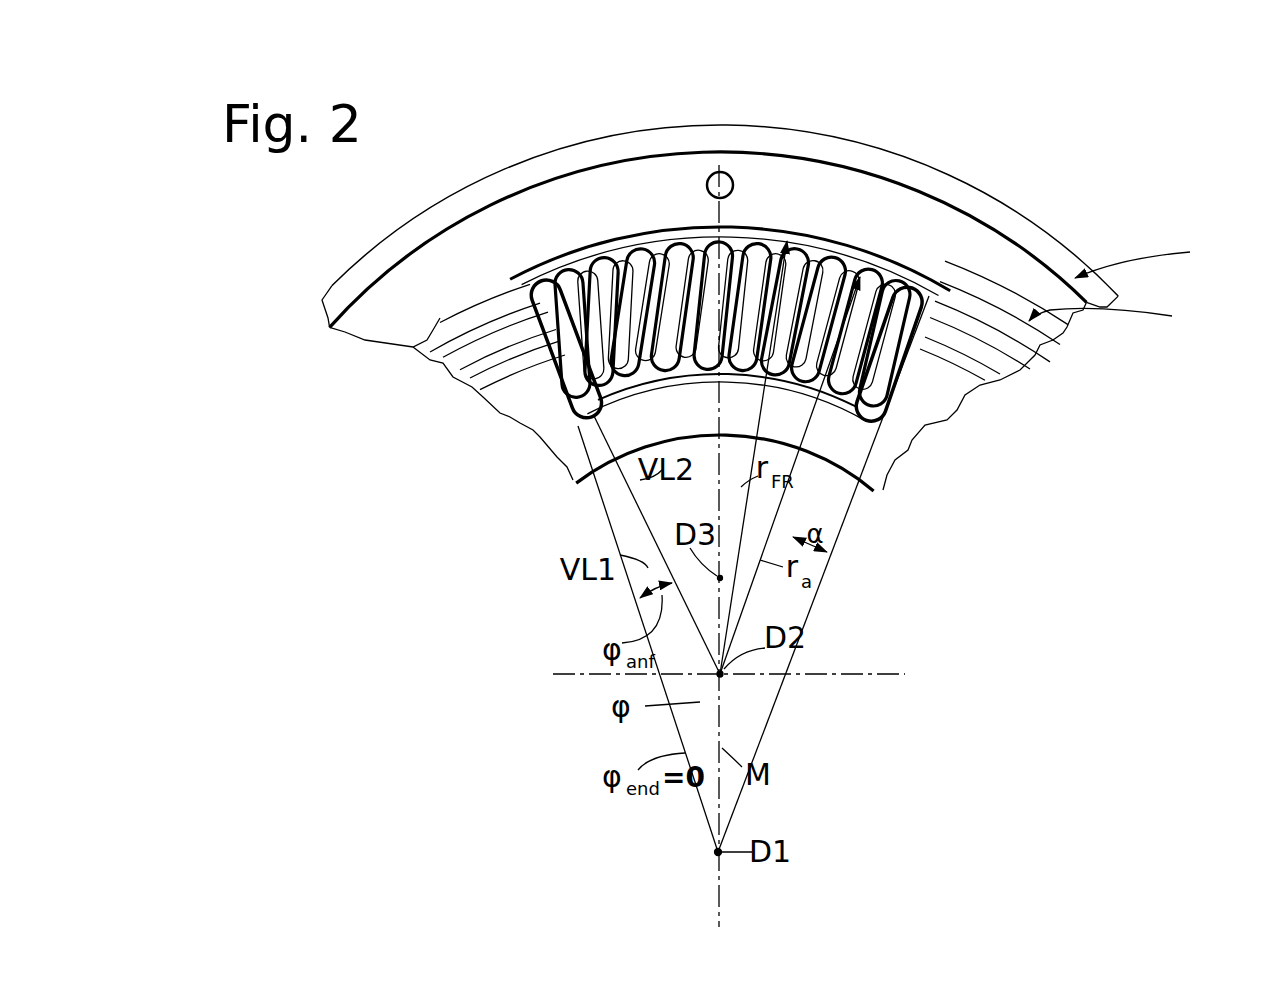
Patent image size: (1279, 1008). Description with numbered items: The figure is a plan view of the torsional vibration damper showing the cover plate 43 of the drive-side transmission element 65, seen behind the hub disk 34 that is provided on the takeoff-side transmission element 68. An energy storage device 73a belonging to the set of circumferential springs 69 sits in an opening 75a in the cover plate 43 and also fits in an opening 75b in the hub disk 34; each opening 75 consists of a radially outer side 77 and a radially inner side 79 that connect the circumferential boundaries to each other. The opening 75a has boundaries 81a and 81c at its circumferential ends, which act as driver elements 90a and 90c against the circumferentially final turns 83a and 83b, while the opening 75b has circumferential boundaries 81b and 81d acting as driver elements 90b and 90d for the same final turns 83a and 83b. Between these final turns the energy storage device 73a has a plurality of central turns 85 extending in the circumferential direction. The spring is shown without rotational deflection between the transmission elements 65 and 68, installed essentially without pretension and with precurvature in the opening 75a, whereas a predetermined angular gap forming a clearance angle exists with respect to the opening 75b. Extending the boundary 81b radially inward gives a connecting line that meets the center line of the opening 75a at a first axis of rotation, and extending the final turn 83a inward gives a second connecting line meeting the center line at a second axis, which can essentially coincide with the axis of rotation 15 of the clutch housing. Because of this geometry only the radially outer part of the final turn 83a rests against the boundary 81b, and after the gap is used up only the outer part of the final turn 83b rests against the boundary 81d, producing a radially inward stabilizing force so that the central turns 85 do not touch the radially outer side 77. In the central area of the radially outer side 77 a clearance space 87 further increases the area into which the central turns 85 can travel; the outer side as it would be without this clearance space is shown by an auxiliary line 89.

The axis of rotation 15 is at (724, 678).
The hub disk 34 is at (437, 272).
The cover plate 43 is at (437, 222).
The drive-side transmission element 65 is at (1153, 254).
The takeoff-side transmission element 68 is at (1120, 315).
The set of circumferential springs 69 is at (598, 330).
The energy storage device 73a is at (870, 258).
The opening 75 is at (755, 240).
The opening in the cover plate 75a is at (880, 425).
The opening in the takeoff-side transmission element 75b is at (933, 313).
The radially outer side 77 is at (900, 250).
The radially inner side 79 is at (657, 240).
The circumferential boundary 81a is at (557, 365).
The circumferential boundary 81b is at (560, 387).
The circumferential boundary 81c is at (895, 398).
The circumferential boundary 81d is at (933, 340).
The circumferentially final turn 83a is at (552, 286).
The circumferentially final turn 83b is at (907, 327).
The central turns 85 is at (782, 232).
The clearance space 87 is at (815, 255).
The auxiliary line 89 is at (840, 262).
The driver element 90a is at (545, 345).
The driver element 90b is at (540, 403).
The driver element 90c is at (925, 320).
The driver element 90d is at (897, 380).